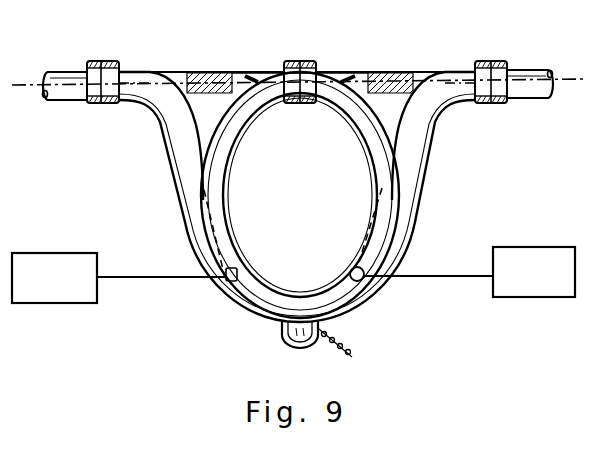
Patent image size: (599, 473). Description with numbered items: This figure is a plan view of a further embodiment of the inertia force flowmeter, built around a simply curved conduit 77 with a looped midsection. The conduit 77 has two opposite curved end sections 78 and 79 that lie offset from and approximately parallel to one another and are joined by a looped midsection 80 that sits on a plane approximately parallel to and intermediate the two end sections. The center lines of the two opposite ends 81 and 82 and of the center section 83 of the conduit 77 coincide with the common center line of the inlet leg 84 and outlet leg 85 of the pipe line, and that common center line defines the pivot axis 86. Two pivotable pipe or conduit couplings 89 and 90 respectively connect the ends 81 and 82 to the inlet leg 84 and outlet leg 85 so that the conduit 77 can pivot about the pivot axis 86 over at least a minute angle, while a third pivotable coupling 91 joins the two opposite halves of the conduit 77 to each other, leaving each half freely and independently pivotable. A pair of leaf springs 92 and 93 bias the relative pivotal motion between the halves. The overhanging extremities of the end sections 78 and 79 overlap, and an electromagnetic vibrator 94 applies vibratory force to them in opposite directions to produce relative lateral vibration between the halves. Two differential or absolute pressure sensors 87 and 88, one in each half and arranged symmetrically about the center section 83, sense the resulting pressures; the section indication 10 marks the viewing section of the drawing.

The section line 10- 10 is at (465, 52).
The conduit 77 is at (229, 297).
The curved end section 78 is at (178, 168).
The curved end section 79 is at (408, 173).
The looped midsection 80 is at (246, 125).
The end of conduit 81 is at (125, 97).
The end of conduit 82 is at (468, 88).
The center section 83 is at (275, 70).
The inlet leg 84 is at (71, 72).
The outlet leg 85 is at (528, 70).
The pivot axis 86 is at (22, 86).
The pressure sensor 87 is at (185, 277).
The pressure sensor 88 is at (400, 276).
The pivotable pipe or conduit coupling 89 is at (112, 38).
The pivotable pipe or conduit coupling 90 is at (517, 30).
The pivotable pipe or conduit coupling 91 is at (313, 30).
The leaf spring 92 is at (204, 72).
The leaf spring 93 is at (393, 72).
The electromagnetic vibrator 94 is at (273, 335).